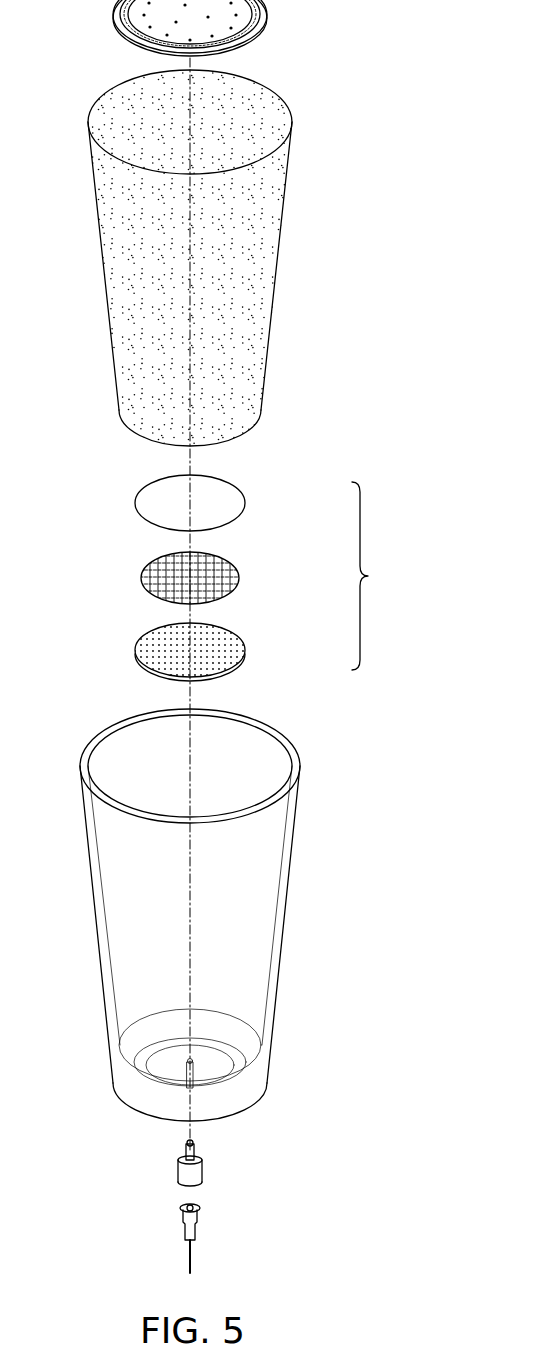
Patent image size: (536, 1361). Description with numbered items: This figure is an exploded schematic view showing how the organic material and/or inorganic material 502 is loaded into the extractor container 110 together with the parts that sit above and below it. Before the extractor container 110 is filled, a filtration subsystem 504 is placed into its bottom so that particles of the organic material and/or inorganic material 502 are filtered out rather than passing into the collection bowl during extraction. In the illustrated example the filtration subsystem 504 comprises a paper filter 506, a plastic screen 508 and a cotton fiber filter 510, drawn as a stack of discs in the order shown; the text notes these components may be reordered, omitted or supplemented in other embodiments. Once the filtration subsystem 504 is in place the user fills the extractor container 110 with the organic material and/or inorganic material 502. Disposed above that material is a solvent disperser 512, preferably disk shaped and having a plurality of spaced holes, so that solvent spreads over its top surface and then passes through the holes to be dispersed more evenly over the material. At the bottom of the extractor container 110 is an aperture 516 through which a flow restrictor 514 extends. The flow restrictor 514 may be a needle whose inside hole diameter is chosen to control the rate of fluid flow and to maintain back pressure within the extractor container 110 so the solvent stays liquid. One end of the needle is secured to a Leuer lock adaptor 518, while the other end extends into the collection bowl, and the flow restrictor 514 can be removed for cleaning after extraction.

The solvent disperser 512 is at (263, 13).
The organic material and/or inorganic material 502 is at (297, 284).
The filtration subsystem 504 is at (383, 576).
The paper filter 506 is at (245, 501).
The plastic screen 508 is at (239, 577).
The cotton fiber filter 510 is at (245, 648).
The extractor container 110 is at (281, 931).
The aperture 516 is at (195, 1066).
The Leuer lock adaptor 518 is at (203, 1172).
The flow restrictor 514 is at (200, 1207).